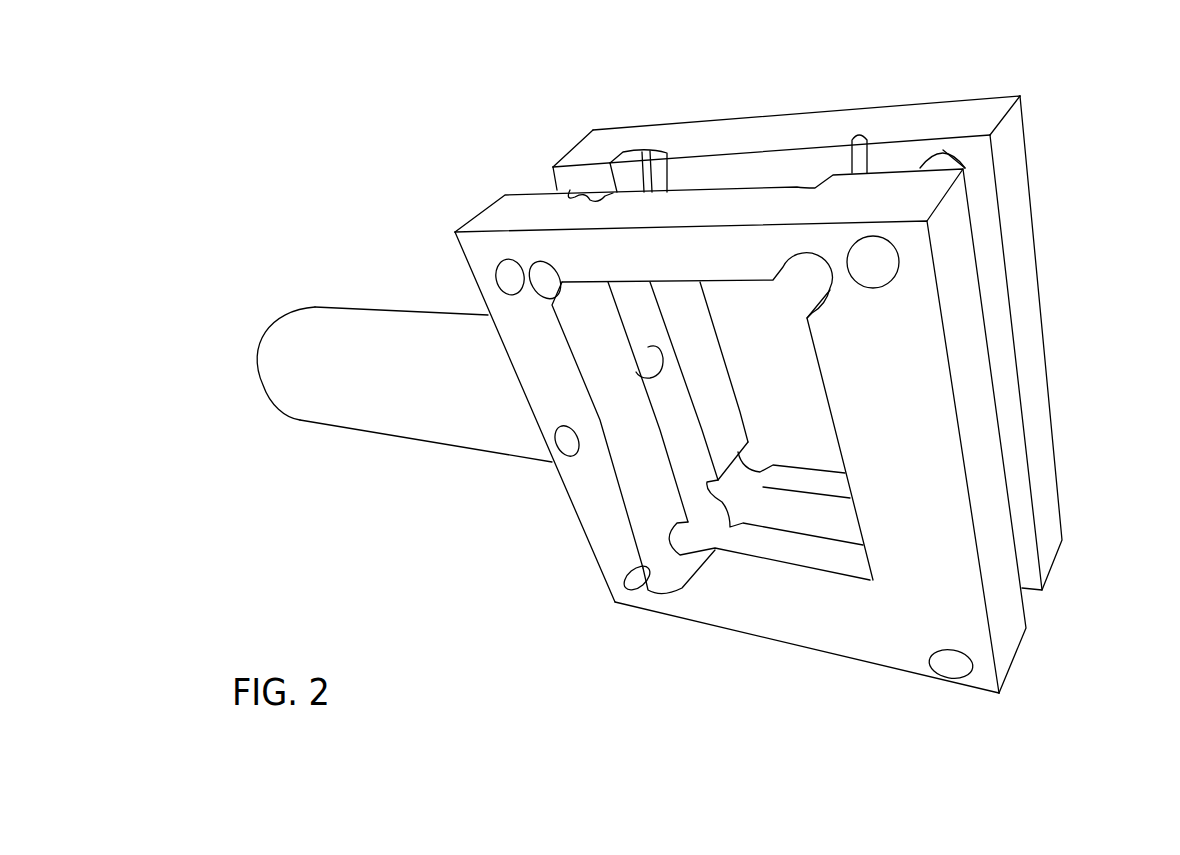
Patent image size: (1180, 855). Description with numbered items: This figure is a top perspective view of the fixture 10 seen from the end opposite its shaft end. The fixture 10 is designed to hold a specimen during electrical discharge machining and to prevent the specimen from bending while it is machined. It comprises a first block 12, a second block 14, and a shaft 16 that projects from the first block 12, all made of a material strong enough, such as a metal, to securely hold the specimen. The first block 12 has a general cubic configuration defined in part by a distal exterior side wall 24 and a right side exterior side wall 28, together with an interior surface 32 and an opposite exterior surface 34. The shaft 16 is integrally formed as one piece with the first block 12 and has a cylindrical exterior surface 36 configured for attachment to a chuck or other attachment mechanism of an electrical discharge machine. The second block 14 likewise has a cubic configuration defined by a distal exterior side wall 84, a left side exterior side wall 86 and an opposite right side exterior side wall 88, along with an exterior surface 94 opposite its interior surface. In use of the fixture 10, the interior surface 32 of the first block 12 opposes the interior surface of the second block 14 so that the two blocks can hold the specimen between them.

The fixture 10 is at (1093, 58).
The first block 12 is at (1033, 166).
The second block 14 is at (1018, 662).
The shaft 16 is at (335, 306).
The distal exterior side wall 24 is at (1028, 277).
The right side exterior side wall 28 is at (796, 118).
The interior surface 32 is at (800, 153).
The exterior surface 34 is at (712, 118).
The cylindrical exterior surface 36 is at (418, 428).
The distal exterior side wall 84 is at (1012, 620).
The left side exterior side wall 86 is at (772, 647).
The right side exterior side wall 88 is at (512, 213).
The exterior surface 94 is at (930, 462).